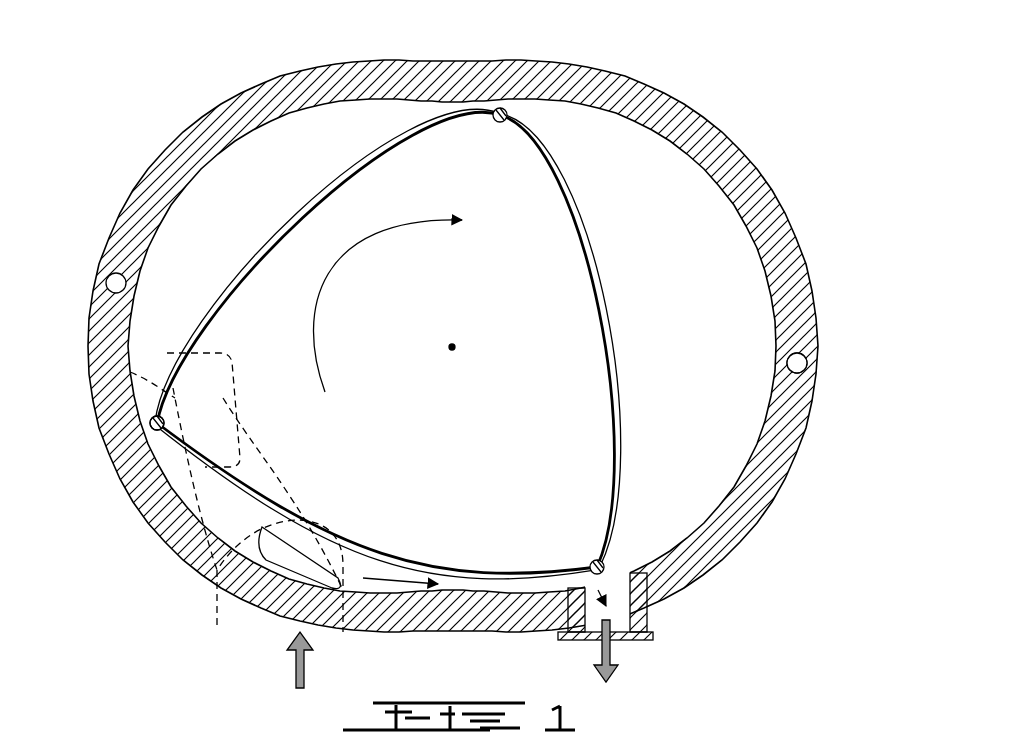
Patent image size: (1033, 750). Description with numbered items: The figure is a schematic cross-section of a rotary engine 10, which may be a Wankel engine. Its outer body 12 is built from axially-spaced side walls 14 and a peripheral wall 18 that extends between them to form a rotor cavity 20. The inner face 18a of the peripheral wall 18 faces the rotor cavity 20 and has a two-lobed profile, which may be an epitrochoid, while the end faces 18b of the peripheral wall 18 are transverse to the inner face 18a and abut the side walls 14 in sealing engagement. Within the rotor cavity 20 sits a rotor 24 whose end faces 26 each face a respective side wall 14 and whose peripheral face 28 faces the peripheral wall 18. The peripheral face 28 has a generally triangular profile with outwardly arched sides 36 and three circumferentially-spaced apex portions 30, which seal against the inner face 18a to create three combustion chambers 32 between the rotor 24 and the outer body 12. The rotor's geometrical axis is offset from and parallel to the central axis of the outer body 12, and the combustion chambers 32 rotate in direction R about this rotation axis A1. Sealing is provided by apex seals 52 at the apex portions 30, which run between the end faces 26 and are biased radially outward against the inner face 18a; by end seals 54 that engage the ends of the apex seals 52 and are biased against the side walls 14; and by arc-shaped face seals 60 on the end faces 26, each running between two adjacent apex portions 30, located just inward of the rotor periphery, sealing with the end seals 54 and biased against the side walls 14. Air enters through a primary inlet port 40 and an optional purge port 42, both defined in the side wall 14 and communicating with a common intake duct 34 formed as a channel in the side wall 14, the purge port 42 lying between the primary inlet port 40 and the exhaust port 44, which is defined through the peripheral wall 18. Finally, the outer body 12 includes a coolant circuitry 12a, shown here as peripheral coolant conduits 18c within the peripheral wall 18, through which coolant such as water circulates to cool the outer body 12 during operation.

The rotary engine 10 is at (487, 350).
The outer body 12 is at (487, 377).
The coolant circuitry 12a is at (808, 365).
The side walls 14 is at (710, 242).
The peripheral wall 18 is at (802, 320).
The inner face 18a is at (698, 526).
The end faces 18b is at (803, 270).
The peripheral coolant conduits 18c is at (106, 280).
The rotor cavity 20 is at (709, 413).
The rotor 24 is at (554, 155).
The end faces 26 is at (327, 297).
The peripheral face 28 is at (413, 137).
The apex portions 30 is at (617, 563).
The combustion chambers 32 is at (296, 172).
The intake duct 34 is at (228, 575).
The outwardly arched sides 36 is at (255, 245).
The primary inlet port 40 is at (140, 355).
The purge port 42 is at (293, 560).
The exhaust port 44 is at (617, 627).
The apex seals 52 is at (152, 427).
The end seals 54 is at (157, 416).
The arc-shaped face seals 60 is at (341, 506).
The direction of rotation R is at (337, 263).
The rotation axis A1 is at (458, 352).